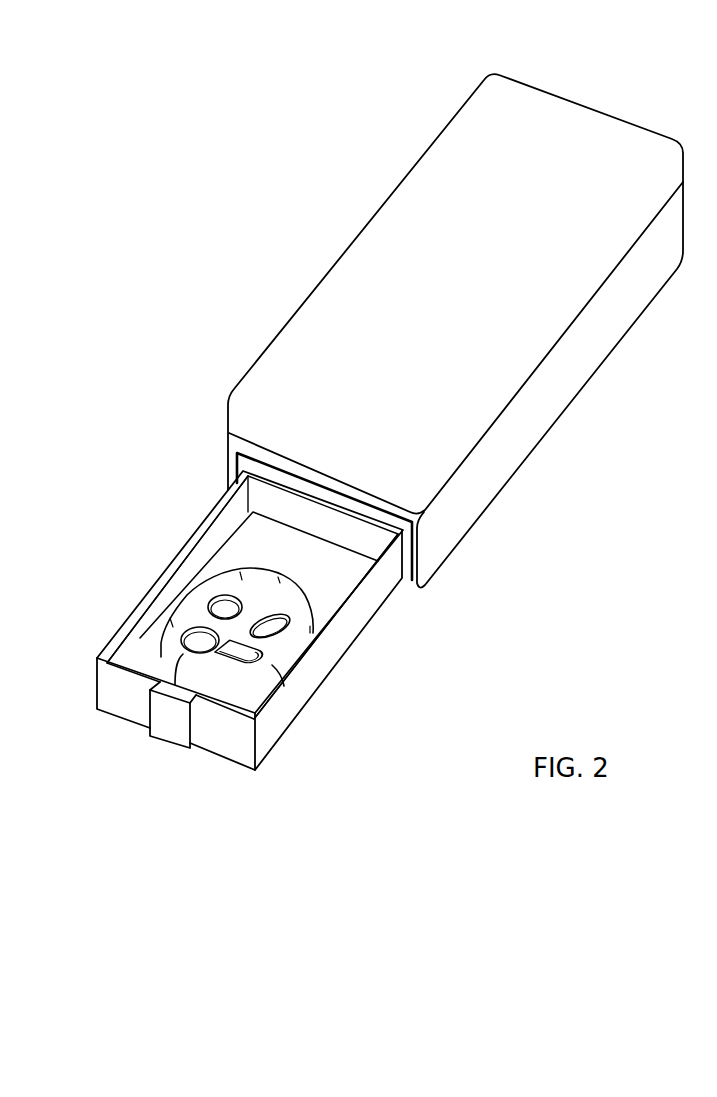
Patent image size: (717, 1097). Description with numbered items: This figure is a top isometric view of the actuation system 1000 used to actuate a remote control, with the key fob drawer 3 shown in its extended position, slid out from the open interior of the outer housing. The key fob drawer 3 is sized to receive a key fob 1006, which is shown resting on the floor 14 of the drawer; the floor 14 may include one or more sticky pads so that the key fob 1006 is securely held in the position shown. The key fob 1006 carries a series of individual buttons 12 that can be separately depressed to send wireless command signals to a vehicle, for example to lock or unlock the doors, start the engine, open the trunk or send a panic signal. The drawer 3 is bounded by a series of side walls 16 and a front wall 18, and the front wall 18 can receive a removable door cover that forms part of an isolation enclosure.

The actuation system 1000 is at (334, 218).
The key fob drawer 3 is at (162, 578).
The floor 14 is at (255, 541).
The side walls 16 is at (140, 638).
The buttons 12 is at (267, 623).
The key fob 1006 is at (278, 647).
The front wall 18 is at (208, 743).